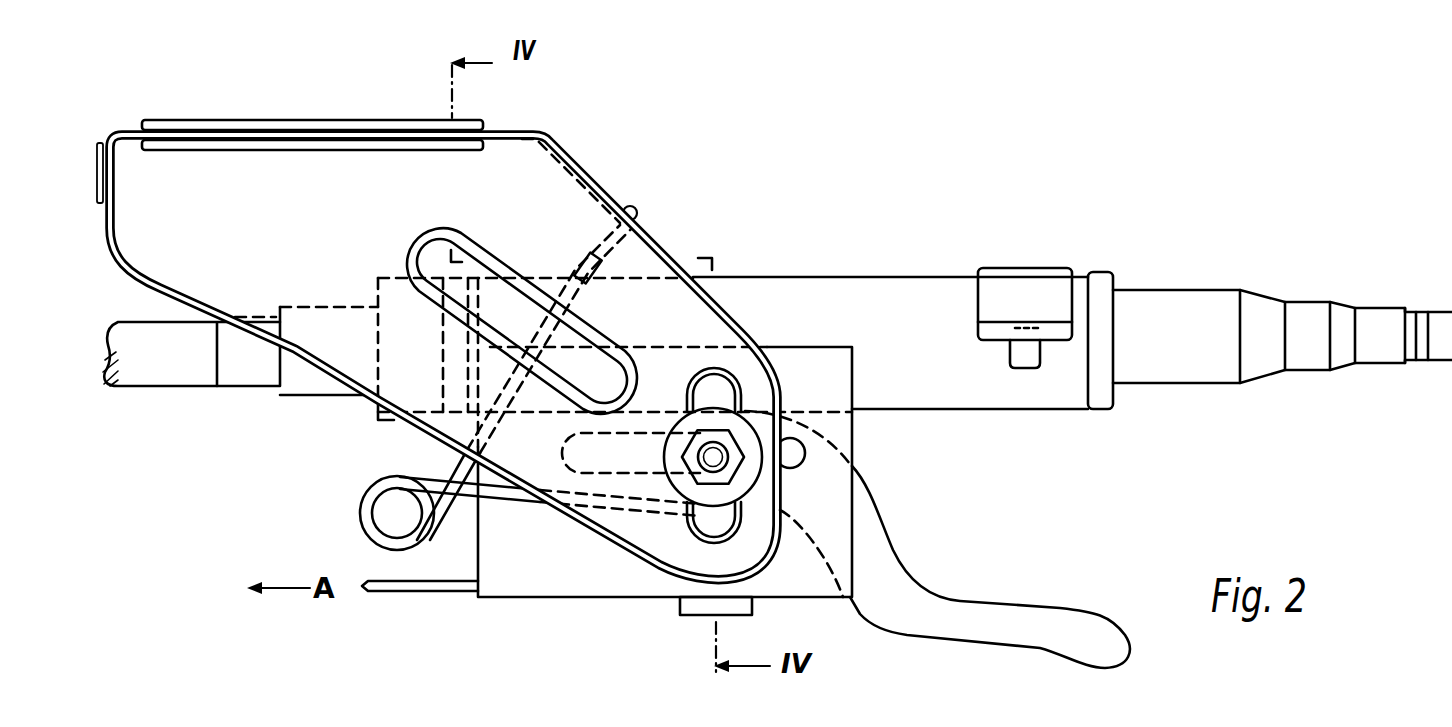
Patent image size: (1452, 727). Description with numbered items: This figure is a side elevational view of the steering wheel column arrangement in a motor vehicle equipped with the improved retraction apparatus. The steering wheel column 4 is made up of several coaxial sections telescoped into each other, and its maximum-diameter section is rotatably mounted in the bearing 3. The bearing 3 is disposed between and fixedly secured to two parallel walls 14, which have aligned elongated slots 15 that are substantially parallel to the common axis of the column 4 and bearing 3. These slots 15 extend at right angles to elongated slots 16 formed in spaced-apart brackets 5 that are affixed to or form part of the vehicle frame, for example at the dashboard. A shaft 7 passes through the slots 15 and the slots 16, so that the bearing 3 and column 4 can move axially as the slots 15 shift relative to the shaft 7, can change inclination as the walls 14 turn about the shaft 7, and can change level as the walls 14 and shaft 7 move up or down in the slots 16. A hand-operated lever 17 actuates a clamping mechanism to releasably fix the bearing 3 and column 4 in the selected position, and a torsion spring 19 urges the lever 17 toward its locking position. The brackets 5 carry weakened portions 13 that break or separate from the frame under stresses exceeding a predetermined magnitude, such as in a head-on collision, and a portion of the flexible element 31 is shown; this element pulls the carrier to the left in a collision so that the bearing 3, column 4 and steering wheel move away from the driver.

The bearing 3 is at (903, 304).
The steering wheel column 4 is at (1163, 310).
The bracket 5 is at (570, 193).
The shaft 7 is at (712, 458).
The weakened portion 13 is at (277, 143).
The wall 14 is at (500, 555).
The elongated slot 15 is at (790, 445).
The elongated slot 16 is at (715, 390).
The lever 17 is at (947, 613).
The torsion spring 19 is at (360, 502).
The flexible element 31 is at (385, 592).